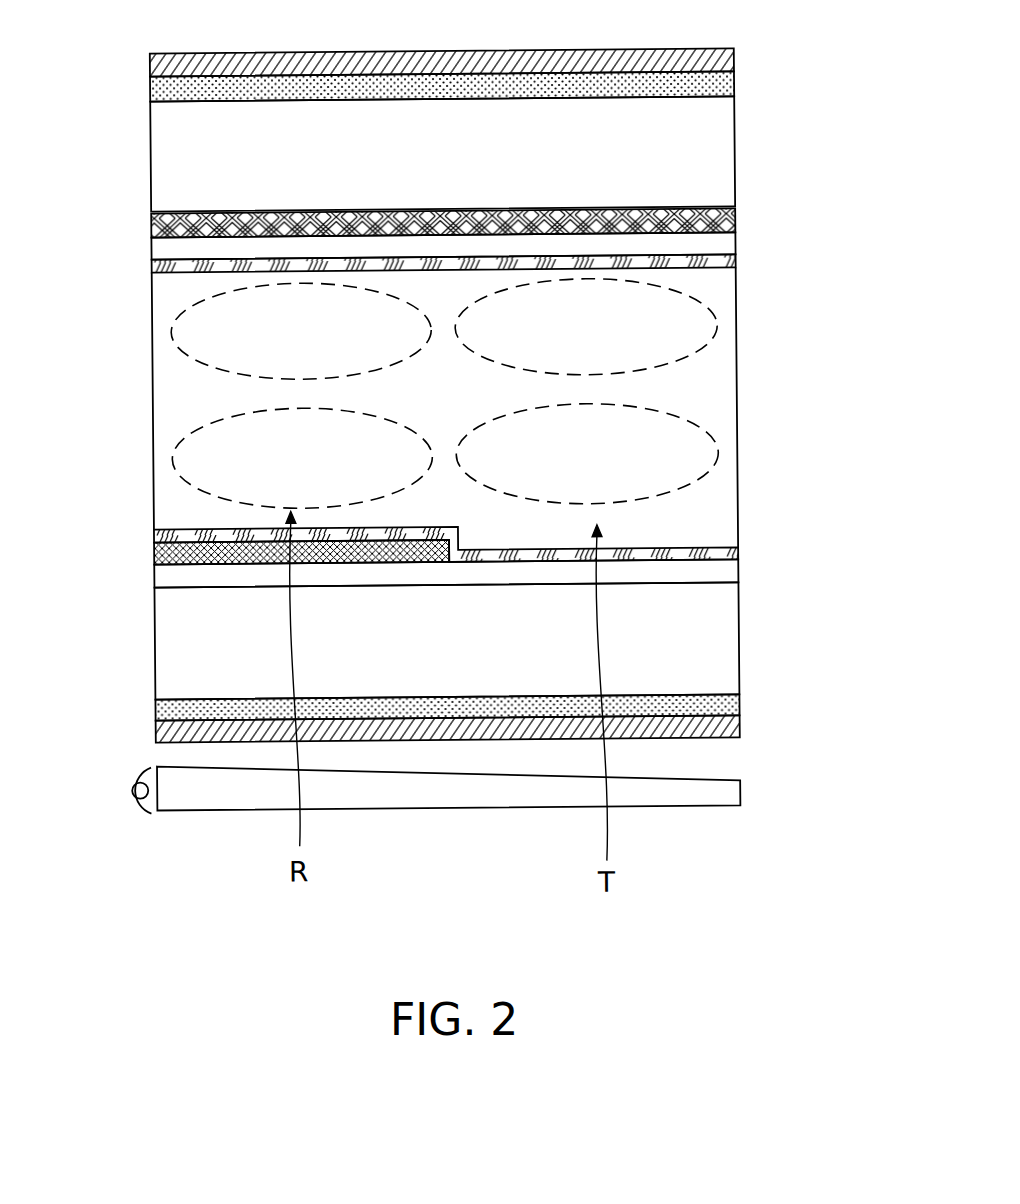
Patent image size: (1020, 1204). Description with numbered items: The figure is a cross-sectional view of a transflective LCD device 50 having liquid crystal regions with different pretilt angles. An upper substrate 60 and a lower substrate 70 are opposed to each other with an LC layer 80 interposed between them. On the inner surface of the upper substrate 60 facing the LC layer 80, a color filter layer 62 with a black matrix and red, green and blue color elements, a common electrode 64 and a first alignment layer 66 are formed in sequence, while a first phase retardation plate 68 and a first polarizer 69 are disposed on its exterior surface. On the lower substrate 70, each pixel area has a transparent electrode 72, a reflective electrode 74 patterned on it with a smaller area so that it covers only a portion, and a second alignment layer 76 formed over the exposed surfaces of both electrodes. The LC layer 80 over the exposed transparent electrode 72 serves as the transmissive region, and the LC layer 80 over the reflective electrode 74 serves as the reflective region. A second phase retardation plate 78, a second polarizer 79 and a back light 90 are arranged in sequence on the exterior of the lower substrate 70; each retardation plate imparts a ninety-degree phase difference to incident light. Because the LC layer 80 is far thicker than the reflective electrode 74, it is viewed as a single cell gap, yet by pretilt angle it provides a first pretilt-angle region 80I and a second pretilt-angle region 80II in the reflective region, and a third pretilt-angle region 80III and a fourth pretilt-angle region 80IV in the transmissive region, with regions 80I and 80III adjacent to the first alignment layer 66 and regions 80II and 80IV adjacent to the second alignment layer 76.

The transflective LCD device 50 is at (112, 52).
The upper substrate 60 is at (718, 160).
The color filter layer 62 is at (737, 219).
The common electrode 64 is at (718, 240).
The first alignment layer 66 is at (737, 264).
The first phase retardation plate 68 is at (737, 89).
The first polarizer 69 is at (737, 63).
The lower substrate 70 is at (718, 650).
The transparent electrode 72 is at (718, 577).
The reflective electrode 74 is at (153, 555).
The second alignment layer 76 is at (737, 554).
The second phase retardation plate 78 is at (718, 705).
The second polarizer 79 is at (737, 733).
The LC layer 80 is at (718, 397).
The first pretilt-angle region 80I is at (190, 330).
The second pretilt-angle region 80II is at (190, 460).
The third pretilt-angle region 80III is at (690, 331).
The fourth pretilt-angle region 80IV is at (690, 459).
The back light 90 is at (718, 799).